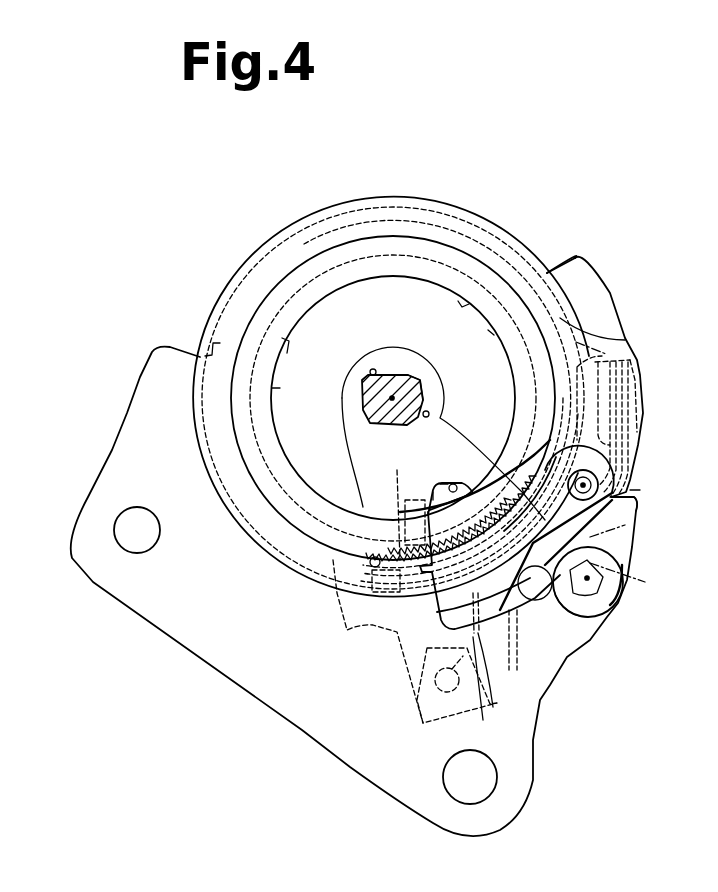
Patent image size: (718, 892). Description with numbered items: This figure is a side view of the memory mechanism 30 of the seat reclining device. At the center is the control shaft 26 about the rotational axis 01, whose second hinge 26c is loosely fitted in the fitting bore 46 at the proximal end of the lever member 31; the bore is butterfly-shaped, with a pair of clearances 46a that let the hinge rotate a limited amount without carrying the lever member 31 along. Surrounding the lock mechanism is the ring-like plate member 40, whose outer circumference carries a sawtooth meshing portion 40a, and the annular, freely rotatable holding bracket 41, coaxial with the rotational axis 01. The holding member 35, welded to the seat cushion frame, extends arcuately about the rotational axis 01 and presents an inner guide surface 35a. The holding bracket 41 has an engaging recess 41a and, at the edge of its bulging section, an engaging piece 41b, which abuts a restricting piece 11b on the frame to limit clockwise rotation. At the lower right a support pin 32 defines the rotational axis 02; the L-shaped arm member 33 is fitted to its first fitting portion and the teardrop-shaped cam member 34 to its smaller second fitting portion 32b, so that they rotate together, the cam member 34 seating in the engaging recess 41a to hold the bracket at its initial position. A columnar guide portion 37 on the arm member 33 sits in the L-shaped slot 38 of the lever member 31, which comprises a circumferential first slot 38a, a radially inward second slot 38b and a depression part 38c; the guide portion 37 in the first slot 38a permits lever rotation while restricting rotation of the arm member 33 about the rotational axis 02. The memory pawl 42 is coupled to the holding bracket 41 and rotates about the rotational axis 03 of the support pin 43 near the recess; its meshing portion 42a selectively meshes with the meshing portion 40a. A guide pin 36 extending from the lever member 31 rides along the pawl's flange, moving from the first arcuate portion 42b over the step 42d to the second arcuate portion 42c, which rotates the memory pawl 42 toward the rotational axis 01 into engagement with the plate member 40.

The memory mechanism 30 is at (528, 219).
The plate member 40 is at (270, 300).
The meshing portion 40a is at (413, 524).
The holding bracket 41 is at (588, 322).
The engaging recess 41a is at (639, 588).
The engaging piece 41b is at (638, 510).
The restricting piece 11b is at (637, 495).
The holding member 35 is at (600, 347).
The guide surface 35a is at (638, 360).
The second hinge 26c is at (408, 380).
The control shaft 26 is at (428, 356).
The clearances 46a is at (376, 370).
The fitting bore 46 is at (363, 391).
The rotational axis O1 01 is at (428, 385).
The rotational axis O2 02 is at (588, 588).
The rotational axis O3 03 is at (613, 532).
The lever member 31 is at (357, 438).
The slot 38 is at (457, 483).
The first slot 38a is at (365, 561).
The second slot 38b is at (436, 482).
The depression part 38c is at (440, 488).
The memory pawl 42 is at (584, 457).
The meshing portion 42a is at (423, 603).
The first arcuate portion 42b is at (517, 633).
The second arcuate portion 42c is at (482, 715).
The step 42d is at (493, 673).
The support pin 43 is at (610, 458).
The arm member 33 is at (630, 553).
The second fitting portion 32b is at (610, 603).
The support pin 32 is at (608, 622).
The guide pin 36 is at (577, 600).
The cam member 34 is at (584, 600).
The guide portion 37 is at (378, 641).